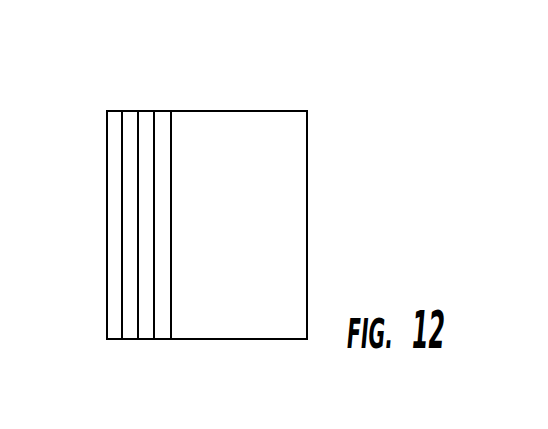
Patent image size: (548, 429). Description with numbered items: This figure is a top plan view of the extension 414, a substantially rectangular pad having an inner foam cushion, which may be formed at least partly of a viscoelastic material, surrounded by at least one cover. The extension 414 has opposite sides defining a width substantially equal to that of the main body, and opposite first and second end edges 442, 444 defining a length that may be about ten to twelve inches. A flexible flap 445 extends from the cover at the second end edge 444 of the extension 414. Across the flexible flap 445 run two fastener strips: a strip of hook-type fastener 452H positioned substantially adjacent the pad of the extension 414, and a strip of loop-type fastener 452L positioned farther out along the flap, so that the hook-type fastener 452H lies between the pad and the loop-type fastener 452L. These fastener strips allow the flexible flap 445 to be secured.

The extension 414 is at (210, 215).
The first end edge 442 is at (307, 240).
The second end edge 444 is at (170, 313).
The flexible flap 445 is at (130, 342).
The loop-type fastener 452L is at (128, 118).
The hook-type fastener 452H is at (160, 120).